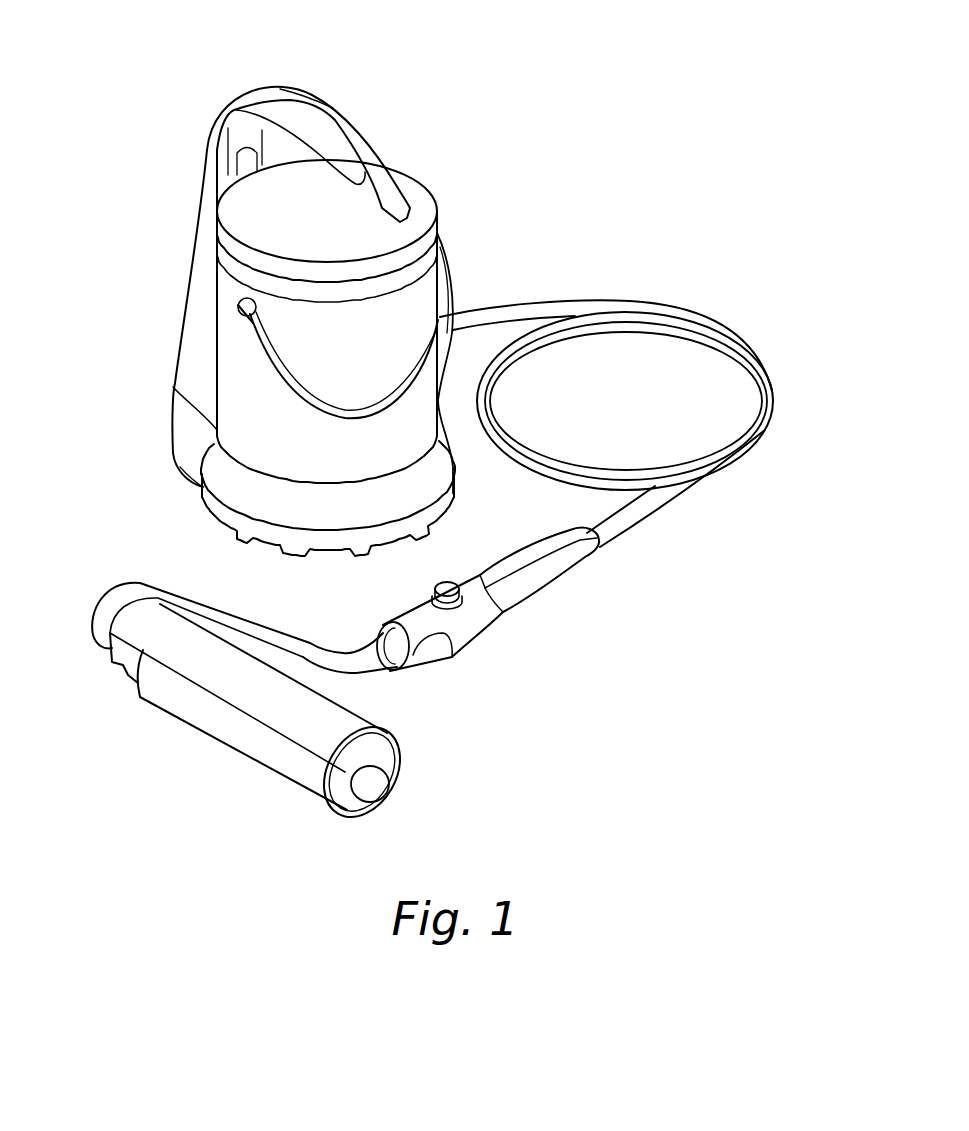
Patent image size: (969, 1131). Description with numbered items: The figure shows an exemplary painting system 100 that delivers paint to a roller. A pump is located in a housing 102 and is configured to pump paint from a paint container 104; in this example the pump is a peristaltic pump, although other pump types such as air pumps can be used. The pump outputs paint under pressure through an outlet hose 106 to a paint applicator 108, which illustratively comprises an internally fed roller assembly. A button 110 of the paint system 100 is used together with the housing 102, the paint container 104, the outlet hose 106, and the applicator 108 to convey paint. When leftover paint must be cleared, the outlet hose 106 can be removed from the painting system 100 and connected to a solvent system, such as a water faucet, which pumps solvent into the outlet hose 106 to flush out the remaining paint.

The painting system 100 is at (565, 135).
The housing 102 is at (193, 403).
The paint container 104 is at (235, 338).
The outlet hose 106 is at (670, 310).
The paint applicator 108 is at (465, 655).
The button 110 is at (450, 582).